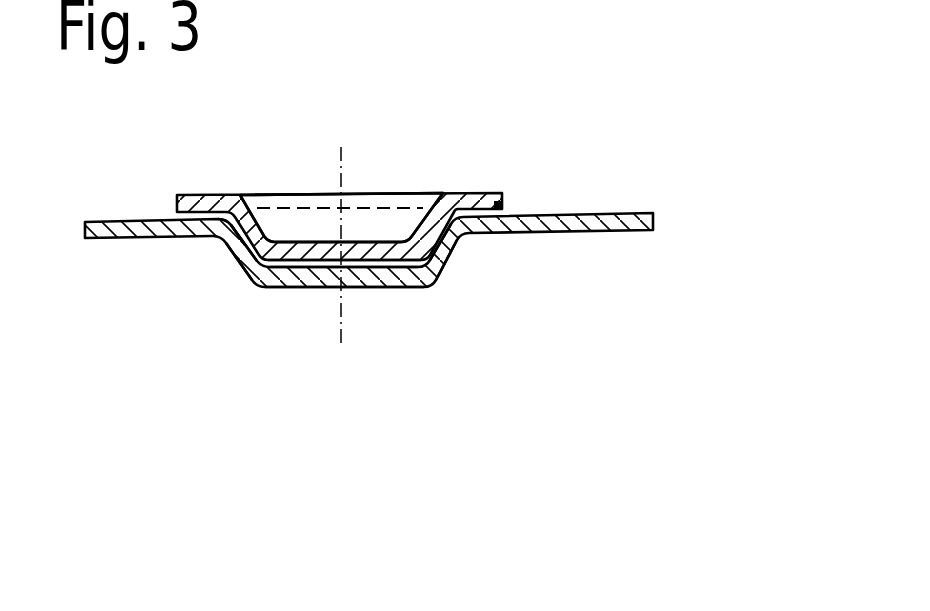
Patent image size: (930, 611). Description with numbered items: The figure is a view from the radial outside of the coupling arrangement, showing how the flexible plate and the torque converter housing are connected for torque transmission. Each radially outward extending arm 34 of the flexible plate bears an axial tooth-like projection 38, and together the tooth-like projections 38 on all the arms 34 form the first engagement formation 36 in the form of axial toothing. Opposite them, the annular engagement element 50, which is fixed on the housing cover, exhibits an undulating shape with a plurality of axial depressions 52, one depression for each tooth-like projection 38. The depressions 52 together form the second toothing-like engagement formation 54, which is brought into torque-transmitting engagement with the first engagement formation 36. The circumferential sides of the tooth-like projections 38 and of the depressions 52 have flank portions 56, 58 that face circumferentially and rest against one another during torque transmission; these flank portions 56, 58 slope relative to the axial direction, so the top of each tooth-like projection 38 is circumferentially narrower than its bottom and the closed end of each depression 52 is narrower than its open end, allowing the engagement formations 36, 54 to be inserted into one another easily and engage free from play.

The arms 34 is at (467, 194).
The first engagement formation 36 is at (278, 181).
The tooth-like projection 38 is at (305, 257).
The engagement element 50 is at (547, 222).
The axial depressions 52 is at (402, 276).
The second engagement formation 54 is at (236, 289).
The flank portions 56 is at (233, 236).
The flank portions 58 is at (447, 250).